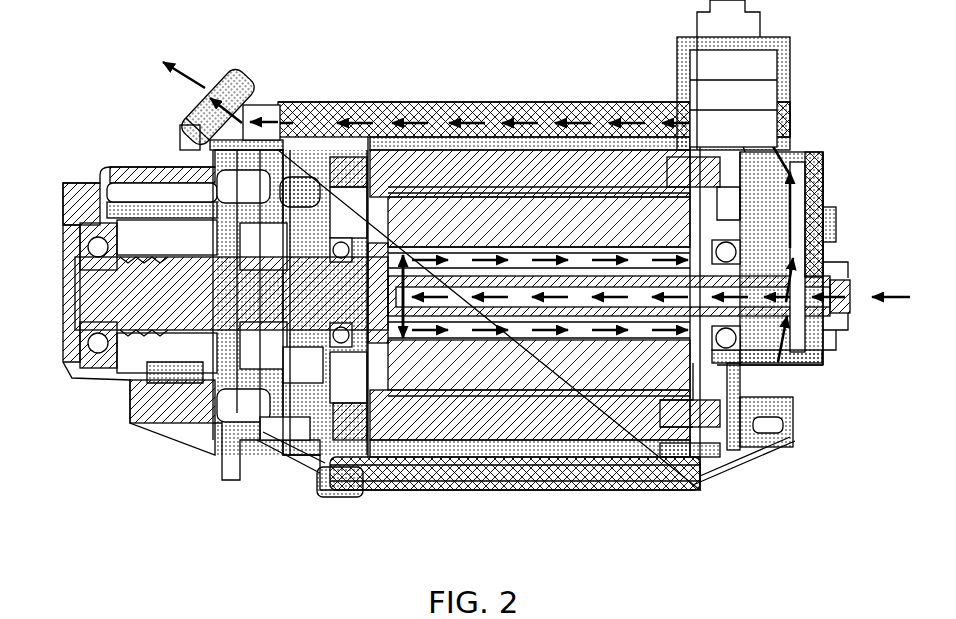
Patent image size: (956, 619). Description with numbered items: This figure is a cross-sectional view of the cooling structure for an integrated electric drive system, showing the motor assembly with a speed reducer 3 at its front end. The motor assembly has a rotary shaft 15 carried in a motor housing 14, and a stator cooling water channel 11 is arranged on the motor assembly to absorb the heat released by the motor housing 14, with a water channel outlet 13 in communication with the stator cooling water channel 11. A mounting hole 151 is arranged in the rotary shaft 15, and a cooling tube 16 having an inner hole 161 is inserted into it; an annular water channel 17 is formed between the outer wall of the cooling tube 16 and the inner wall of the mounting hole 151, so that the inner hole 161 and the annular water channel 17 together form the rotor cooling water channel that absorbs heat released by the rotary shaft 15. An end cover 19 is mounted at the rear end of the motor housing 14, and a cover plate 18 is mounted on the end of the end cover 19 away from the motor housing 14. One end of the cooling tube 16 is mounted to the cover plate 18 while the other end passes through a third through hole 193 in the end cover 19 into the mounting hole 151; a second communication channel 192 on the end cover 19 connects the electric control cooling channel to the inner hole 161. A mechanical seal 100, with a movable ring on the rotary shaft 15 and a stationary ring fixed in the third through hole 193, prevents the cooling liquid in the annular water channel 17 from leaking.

The speed reducer 3 is at (93, 400).
The stator cooling water channel 11 is at (385, 105).
The water channel outlet 13 is at (222, 82).
The motor housing 14 is at (455, 105).
The rotary shaft 15 is at (463, 497).
The cooling tube 16 is at (828, 250).
The annular water channel 17 is at (660, 497).
The cover plate 18 is at (827, 357).
The end cover 19 is at (805, 225).
The mechanical seal 100 is at (770, 367).
The mounting hole 151 is at (560, 497).
The inner hole 161 is at (567, 103).
The second communication channel 192 is at (790, 172).
The third through hole 193 is at (793, 380).